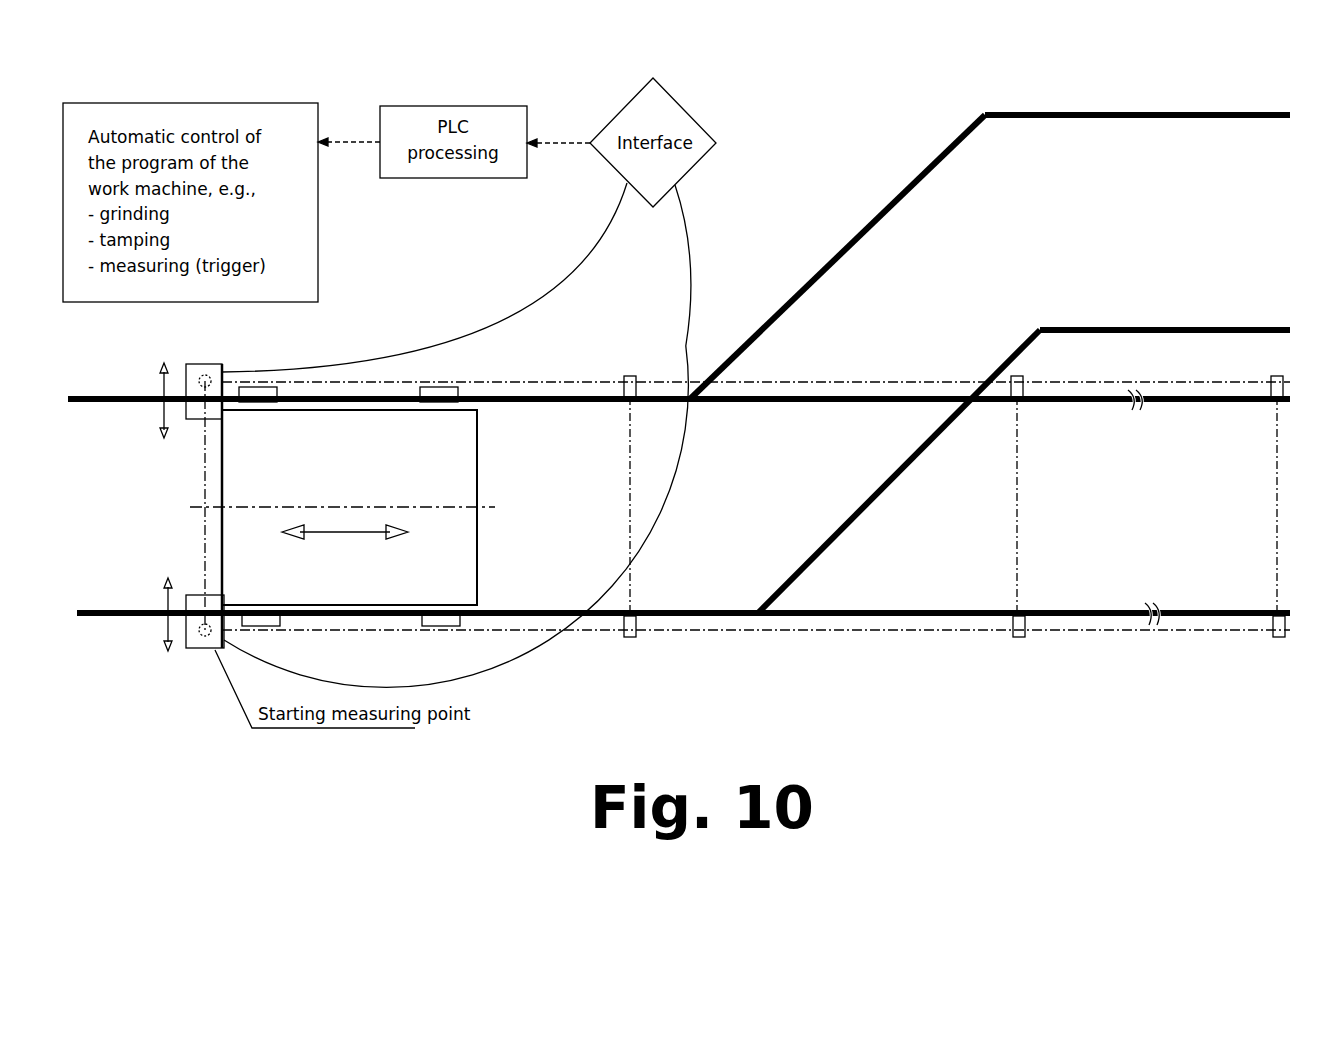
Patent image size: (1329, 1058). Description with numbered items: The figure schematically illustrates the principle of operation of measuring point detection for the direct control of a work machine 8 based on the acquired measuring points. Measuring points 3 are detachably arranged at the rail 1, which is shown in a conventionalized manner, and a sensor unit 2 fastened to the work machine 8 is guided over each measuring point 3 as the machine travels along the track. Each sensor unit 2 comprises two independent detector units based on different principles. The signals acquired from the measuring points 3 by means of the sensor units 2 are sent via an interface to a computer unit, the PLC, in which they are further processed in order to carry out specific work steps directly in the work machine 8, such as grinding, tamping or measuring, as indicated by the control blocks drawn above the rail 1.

The rail 1 is at (134, 402).
The sensor unit 2 is at (187, 364).
The measuring point 3 is at (713, 383).
The work machine 8 is at (447, 497).